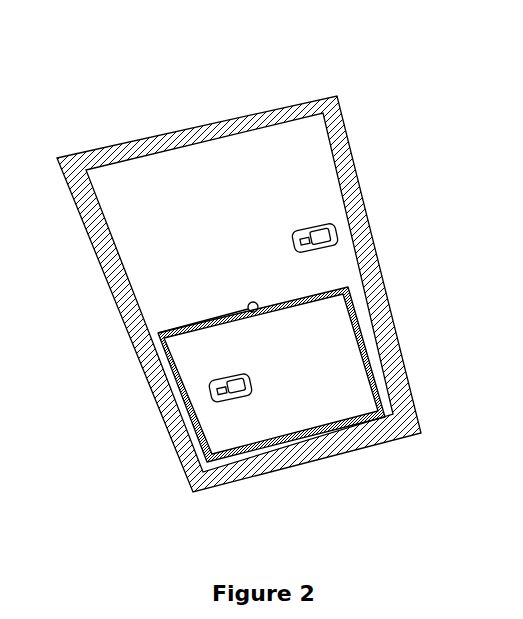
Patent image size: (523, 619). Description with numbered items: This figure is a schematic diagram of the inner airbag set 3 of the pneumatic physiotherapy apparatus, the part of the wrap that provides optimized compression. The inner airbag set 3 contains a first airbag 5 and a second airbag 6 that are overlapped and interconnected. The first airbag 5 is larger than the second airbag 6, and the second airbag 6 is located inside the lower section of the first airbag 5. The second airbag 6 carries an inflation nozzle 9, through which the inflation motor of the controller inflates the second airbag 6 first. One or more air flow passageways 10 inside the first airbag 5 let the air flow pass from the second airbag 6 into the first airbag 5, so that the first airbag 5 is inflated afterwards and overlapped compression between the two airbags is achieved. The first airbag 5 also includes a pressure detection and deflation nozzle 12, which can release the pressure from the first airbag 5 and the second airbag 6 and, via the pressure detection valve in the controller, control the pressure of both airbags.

The inner airbag set 3 is at (208, 124).
The first airbag 5 is at (145, 185).
The second airbag 6 is at (280, 413).
The inflation nozzle 9 is at (228, 396).
The air flow passageway 10 is at (249, 310).
The pressure detection and deflation nozzle 12 is at (330, 230).